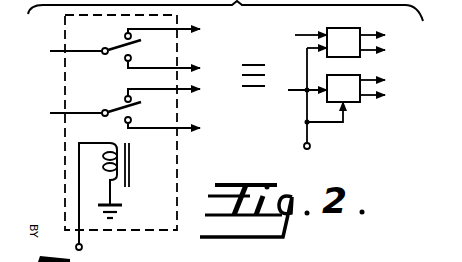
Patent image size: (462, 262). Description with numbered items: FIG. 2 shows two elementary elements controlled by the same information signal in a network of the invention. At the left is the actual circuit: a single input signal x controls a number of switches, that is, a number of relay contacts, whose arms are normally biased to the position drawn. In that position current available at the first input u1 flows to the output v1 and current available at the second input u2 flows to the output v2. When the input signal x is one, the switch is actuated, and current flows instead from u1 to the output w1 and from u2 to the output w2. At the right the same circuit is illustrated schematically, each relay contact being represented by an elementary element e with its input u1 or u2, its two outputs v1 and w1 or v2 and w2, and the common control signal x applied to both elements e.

The first input u1 is at (176, 45).
The second input u2 is at (173, 107).
The first normal output v1 is at (267, 34).
The first actuated output w1 is at (270, 62).
The second normal output v2 is at (268, 87).
The second actuated output w2 is at (271, 115).
The input signal x is at (209, 154).
The elementary element e is at (343, 65).